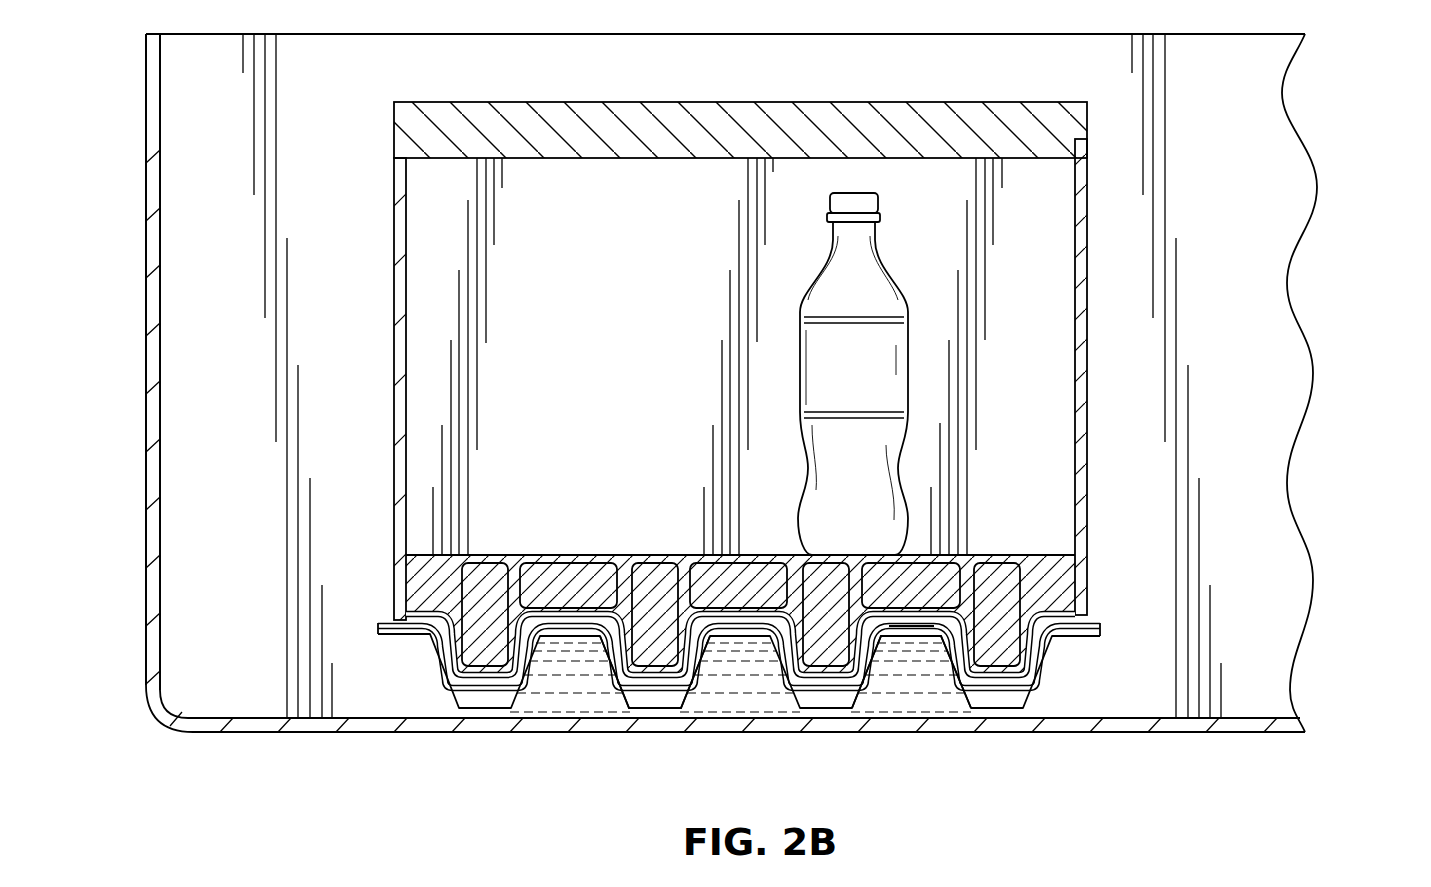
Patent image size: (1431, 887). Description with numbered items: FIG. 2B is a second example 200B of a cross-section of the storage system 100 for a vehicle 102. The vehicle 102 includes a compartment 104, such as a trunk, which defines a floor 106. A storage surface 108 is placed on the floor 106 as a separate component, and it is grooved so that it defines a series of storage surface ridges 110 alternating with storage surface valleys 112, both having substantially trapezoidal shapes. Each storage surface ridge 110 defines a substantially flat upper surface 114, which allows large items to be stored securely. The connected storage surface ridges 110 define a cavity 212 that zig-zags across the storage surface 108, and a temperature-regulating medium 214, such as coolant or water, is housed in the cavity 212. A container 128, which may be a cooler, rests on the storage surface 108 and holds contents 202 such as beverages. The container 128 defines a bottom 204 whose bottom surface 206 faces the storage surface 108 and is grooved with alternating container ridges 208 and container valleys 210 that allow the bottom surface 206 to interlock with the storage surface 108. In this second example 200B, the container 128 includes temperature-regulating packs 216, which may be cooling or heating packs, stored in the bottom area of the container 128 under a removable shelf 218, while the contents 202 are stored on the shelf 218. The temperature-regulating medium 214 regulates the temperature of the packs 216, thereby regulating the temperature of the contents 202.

The storage system 100 is at (147, 175).
The vehicle 102 is at (147, 262).
The compartment 104 is at (147, 362).
The floor 106 is at (278, 733).
The storage surface 108 is at (398, 686).
The storage surface ridge 110 is at (570, 640).
The storage surface valley 112 is at (655, 715).
The substantially flat upper surface 114 is at (742, 640).
The container 128 is at (400, 480).
The second example 200B is at (1350, 165).
The contents 202 is at (897, 292).
The bottom 204 is at (823, 685).
The bottom surface 206 is at (808, 690).
The container ridge 208 is at (987, 683).
The container valley 210 is at (902, 640).
The cavity 212 is at (917, 688).
The temperature-regulating medium 214 is at (927, 650).
The temperature-regulating pack 216 is at (1023, 595).
The shelf 218 is at (1045, 555).